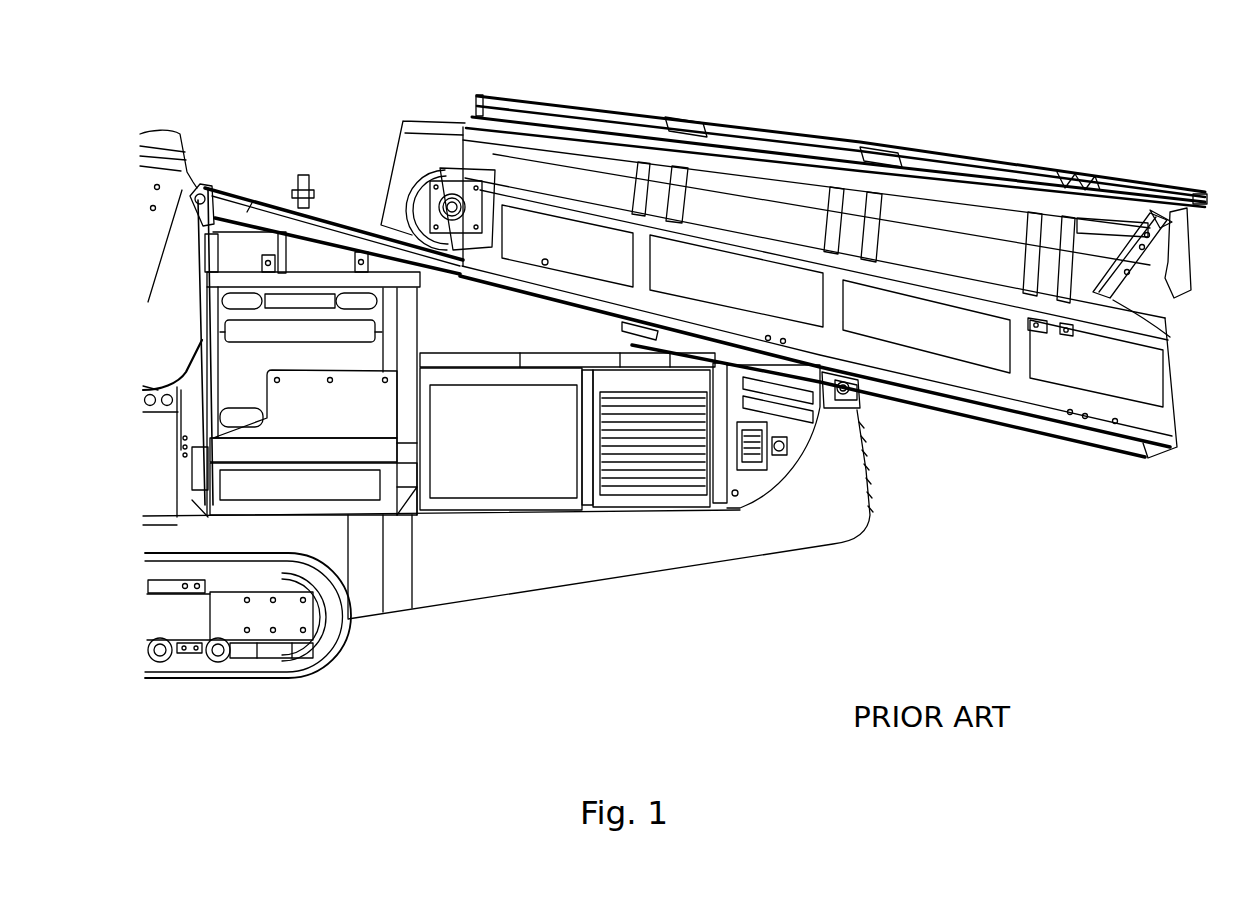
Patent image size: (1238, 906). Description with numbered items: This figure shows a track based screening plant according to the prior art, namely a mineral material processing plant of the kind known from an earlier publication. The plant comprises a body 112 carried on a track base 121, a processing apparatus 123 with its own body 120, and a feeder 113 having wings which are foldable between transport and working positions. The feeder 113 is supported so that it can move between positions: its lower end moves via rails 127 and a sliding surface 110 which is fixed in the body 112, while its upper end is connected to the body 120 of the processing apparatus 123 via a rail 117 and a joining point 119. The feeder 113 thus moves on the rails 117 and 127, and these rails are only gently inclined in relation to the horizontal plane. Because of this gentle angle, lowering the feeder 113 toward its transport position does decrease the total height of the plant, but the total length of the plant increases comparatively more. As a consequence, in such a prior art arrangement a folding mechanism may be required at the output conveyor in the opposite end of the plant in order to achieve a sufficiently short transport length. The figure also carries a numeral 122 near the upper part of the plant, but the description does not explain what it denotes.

The sliding surface 110 is at (826, 350).
The body 112 is at (305, 537).
The feeder 113 is at (1017, 207).
The rail 117 is at (324, 234).
The joining point 119 is at (210, 187).
The body of the processing apparatus 120 is at (181, 332).
The track base 121 is at (240, 665).
The hopper extension 122 is at (157, 137).
The processing apparatus 123 is at (140, 253).
The rails 127 is at (643, 327).